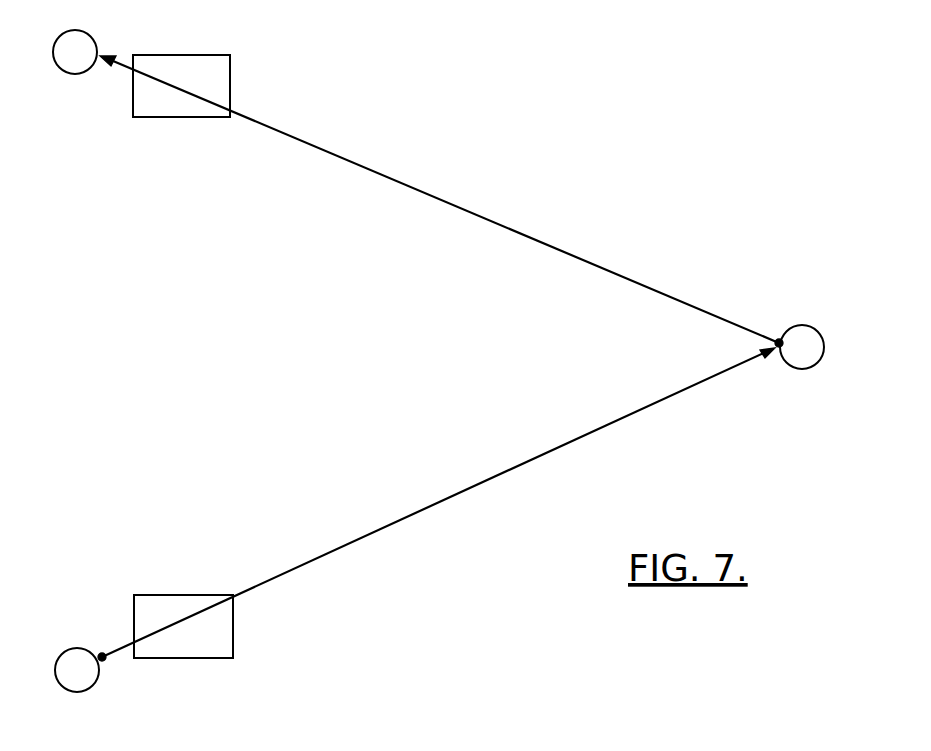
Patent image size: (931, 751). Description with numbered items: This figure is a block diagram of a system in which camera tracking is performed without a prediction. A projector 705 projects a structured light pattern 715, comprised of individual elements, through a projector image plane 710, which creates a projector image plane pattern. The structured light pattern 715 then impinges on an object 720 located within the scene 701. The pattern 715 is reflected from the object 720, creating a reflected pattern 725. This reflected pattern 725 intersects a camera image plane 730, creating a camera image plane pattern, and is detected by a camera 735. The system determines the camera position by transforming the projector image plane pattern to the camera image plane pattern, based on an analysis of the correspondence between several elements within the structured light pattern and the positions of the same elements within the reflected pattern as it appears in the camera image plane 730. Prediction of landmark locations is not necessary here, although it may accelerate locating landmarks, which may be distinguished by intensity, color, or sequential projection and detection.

The scene 701 is at (642, 186).
The projector 705 is at (80, 670).
The projector image plane 710 is at (172, 594).
The pattern 715 is at (450, 495).
The object 720 is at (799, 347).
The reflected pattern 725 is at (450, 204).
The camera image plane 730 is at (255, 82).
The camera 735 is at (75, 52).